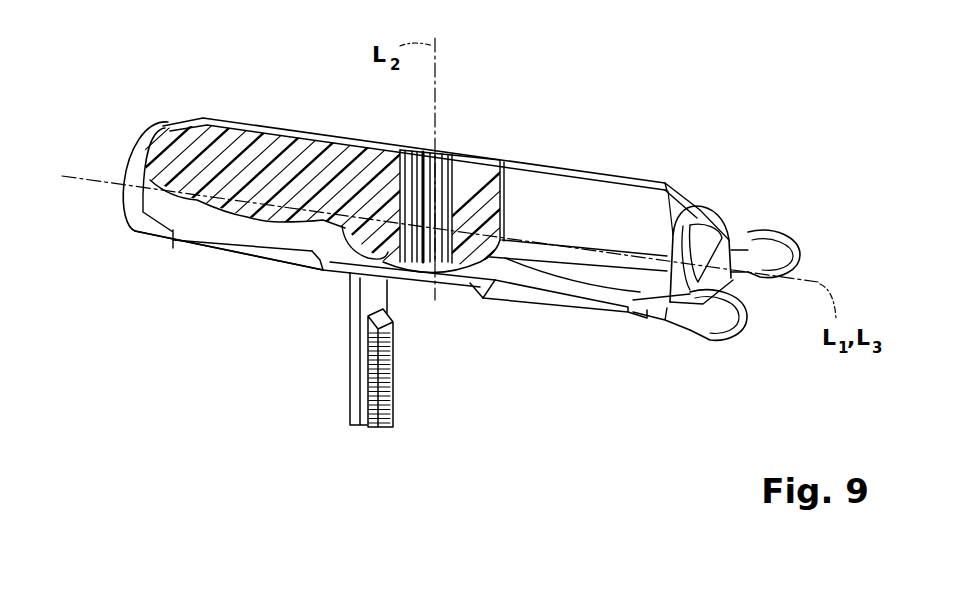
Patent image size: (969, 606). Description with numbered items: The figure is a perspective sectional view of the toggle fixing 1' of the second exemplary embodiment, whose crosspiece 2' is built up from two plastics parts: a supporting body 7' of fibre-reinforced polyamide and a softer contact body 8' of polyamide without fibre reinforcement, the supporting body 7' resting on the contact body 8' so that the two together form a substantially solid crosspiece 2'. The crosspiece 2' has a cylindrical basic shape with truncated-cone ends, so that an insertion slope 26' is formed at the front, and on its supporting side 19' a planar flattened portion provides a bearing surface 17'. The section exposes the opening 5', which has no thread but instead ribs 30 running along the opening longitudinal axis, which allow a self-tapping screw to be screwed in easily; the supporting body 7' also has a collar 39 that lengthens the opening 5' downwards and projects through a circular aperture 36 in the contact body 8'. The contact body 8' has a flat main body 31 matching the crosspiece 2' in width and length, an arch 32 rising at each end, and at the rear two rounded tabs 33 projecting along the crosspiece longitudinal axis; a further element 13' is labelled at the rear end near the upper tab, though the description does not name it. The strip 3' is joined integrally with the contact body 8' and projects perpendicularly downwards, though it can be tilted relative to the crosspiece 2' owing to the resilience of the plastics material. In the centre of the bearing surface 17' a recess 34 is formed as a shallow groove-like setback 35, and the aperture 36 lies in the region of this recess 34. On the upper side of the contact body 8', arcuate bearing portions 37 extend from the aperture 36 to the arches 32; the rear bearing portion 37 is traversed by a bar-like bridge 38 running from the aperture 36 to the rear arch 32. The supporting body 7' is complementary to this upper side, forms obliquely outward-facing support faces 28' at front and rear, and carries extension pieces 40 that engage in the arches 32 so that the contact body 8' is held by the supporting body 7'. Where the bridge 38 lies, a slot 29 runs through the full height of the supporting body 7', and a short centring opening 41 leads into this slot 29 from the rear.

The toggle fixing 1' is at (690, 105).
The crosspiece 2' is at (431, 147).
The strip 3' is at (343, 352).
The opening 5' is at (444, 167).
The supporting body 7' is at (417, 118).
The contact body 8' is at (199, 244).
The upper mounting lug 13' is at (769, 228).
The bearing surface 17' is at (565, 313).
The supporting side 19' is at (547, 343).
The insertion slope 26' is at (290, 160).
The support faces 28' is at (207, 250).
The slot 29 is at (550, 187).
The ribs 30 is at (465, 158).
The flat main body 31 is at (275, 259).
The arch 32 is at (140, 153).
The rounded tabs 33 is at (722, 322).
The recess 34 is at (468, 308).
The groove-like setback 35 is at (470, 292).
The circular aperture 36 is at (422, 268).
The arcuate bearing portions 37 is at (217, 234).
The bridge 38 is at (643, 283).
The collar 39 is at (367, 270).
The extension pieces 40 is at (168, 148).
The centring opening 41 is at (705, 215).